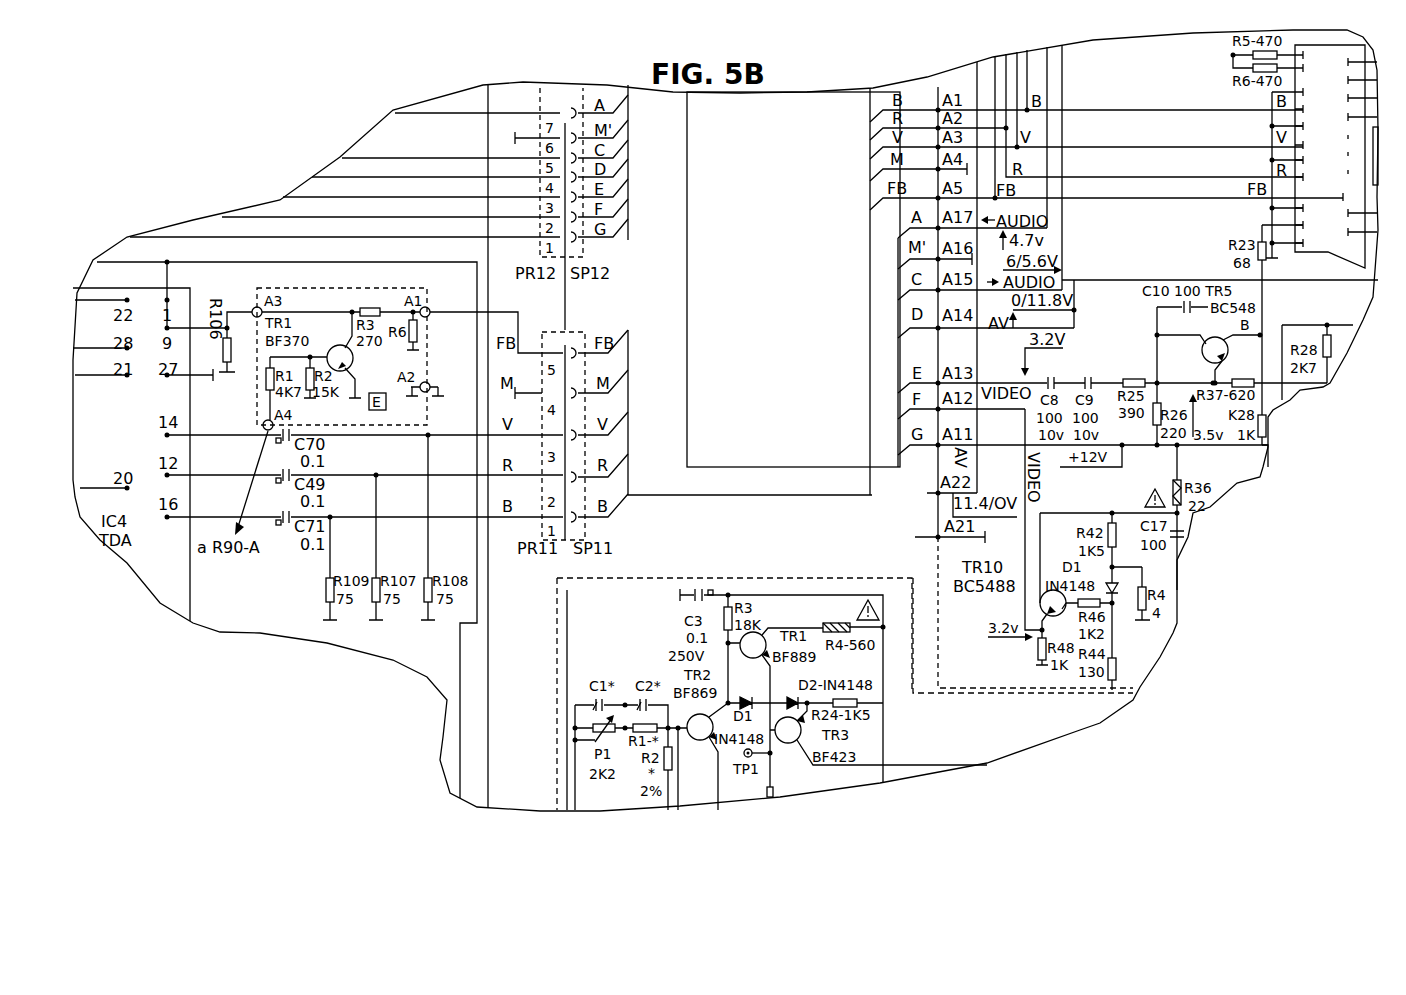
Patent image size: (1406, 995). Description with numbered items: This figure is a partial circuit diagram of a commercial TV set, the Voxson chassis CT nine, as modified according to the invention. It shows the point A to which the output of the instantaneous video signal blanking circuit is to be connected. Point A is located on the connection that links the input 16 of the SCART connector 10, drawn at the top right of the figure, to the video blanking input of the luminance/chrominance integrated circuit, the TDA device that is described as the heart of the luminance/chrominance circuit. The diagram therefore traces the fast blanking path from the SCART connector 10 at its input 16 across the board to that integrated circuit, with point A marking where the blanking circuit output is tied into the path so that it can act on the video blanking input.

The SCART connector 10 is at (1365, 183).
The input of the SCART connector 16 is at (250, 632).
The point A is at (517, 315).